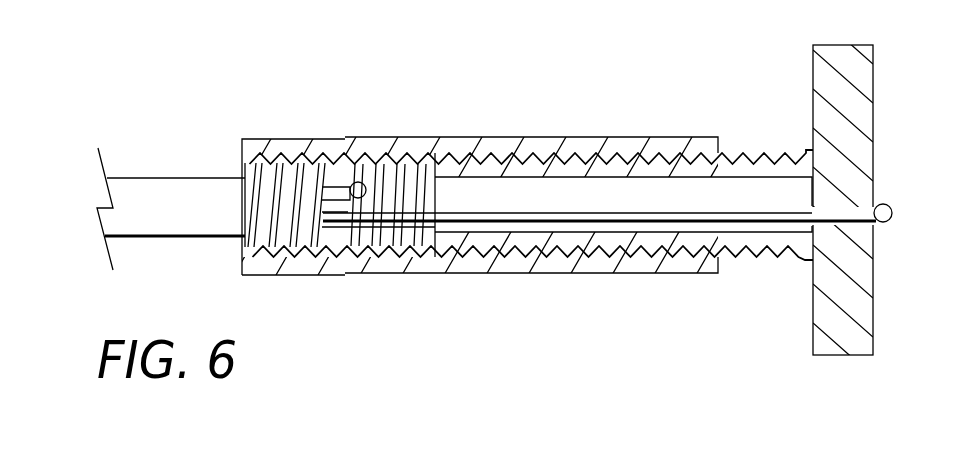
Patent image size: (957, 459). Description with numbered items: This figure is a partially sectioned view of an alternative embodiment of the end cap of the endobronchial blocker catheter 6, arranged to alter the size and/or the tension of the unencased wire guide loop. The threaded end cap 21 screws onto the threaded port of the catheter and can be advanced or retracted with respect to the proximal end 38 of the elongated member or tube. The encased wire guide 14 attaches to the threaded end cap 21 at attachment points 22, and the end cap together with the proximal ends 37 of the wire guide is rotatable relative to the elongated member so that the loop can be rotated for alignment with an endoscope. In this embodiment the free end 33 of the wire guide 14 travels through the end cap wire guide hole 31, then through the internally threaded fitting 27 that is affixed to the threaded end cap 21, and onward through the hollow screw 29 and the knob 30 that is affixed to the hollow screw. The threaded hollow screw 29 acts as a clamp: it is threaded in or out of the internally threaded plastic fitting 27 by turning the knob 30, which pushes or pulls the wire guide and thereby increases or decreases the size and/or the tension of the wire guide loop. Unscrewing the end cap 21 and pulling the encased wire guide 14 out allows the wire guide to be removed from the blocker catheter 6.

The endobronchial blocker catheter 6 is at (193, 163).
The encased wire guide 14 is at (496, 212).
The threaded end cap 21 is at (283, 137).
The attachment points 22 is at (372, 158).
The internally threaded fitting 27 is at (453, 274).
The hollow screw 29 is at (794, 252).
The knob 30 is at (873, 80).
The end cap wire guide hole 31 is at (340, 232).
The free end 33 is at (750, 204).
The proximal ends 37 is at (333, 168).
The proximal end 38 is at (428, 120).